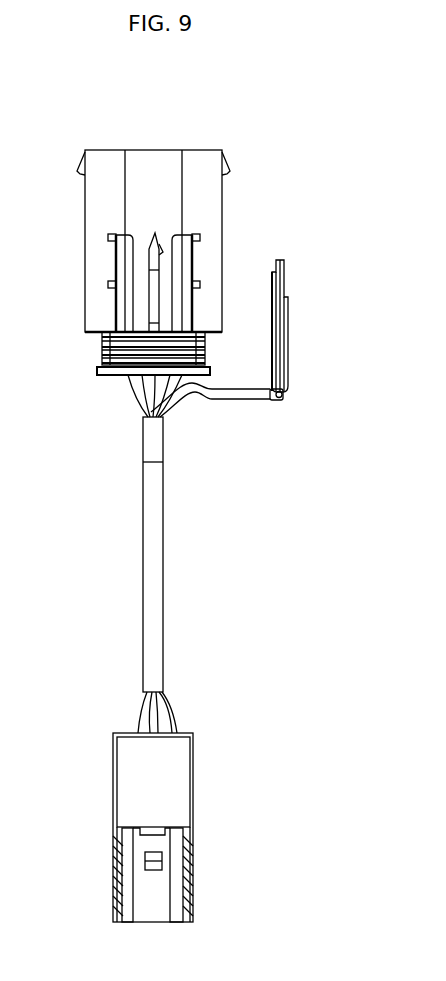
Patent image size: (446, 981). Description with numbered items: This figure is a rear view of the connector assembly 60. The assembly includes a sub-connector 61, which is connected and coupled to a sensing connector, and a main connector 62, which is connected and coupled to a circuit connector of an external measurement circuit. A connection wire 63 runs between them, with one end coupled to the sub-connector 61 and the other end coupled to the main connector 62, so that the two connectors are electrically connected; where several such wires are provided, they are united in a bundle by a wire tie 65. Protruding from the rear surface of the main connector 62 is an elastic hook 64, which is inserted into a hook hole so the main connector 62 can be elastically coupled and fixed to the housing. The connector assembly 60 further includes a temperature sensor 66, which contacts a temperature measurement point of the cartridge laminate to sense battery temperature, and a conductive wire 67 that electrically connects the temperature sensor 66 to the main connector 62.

The connector assembly 60 is at (112, 95).
The sub-connector 61 is at (180, 773).
The main connector 62 is at (158, 158).
The connection wire 63 is at (173, 717).
The elastic hook 64 is at (123, 257).
The wire tie 65 is at (155, 533).
The temperature sensor 66 is at (273, 270).
The conductive wire 67 is at (247, 399).